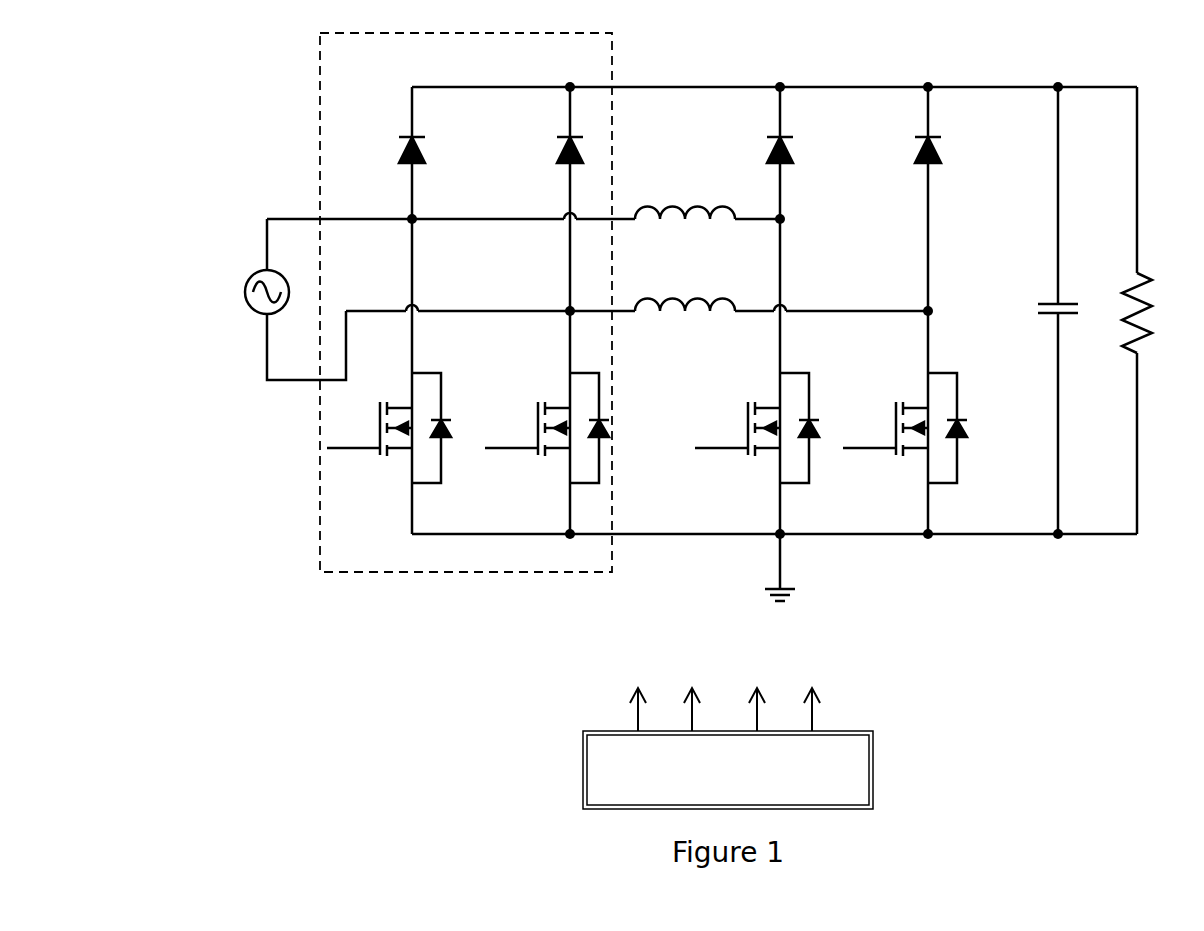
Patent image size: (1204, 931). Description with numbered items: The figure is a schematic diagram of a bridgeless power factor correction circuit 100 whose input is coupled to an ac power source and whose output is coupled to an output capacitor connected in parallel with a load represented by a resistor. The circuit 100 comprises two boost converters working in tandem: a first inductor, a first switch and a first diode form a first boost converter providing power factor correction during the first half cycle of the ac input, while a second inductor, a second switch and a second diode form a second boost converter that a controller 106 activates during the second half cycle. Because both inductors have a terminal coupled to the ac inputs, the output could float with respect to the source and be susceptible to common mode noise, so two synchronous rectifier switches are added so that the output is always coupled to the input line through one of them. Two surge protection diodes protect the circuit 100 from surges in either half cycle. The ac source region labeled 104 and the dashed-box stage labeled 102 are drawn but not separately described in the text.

The bridgeless power factor correction circuit 100 is at (1036, 599).
The surge protection / synchronous rectifier stage 102 is at (466, 338).
The AC source 104 is at (262, 302).
The controller 106 is at (693, 752).